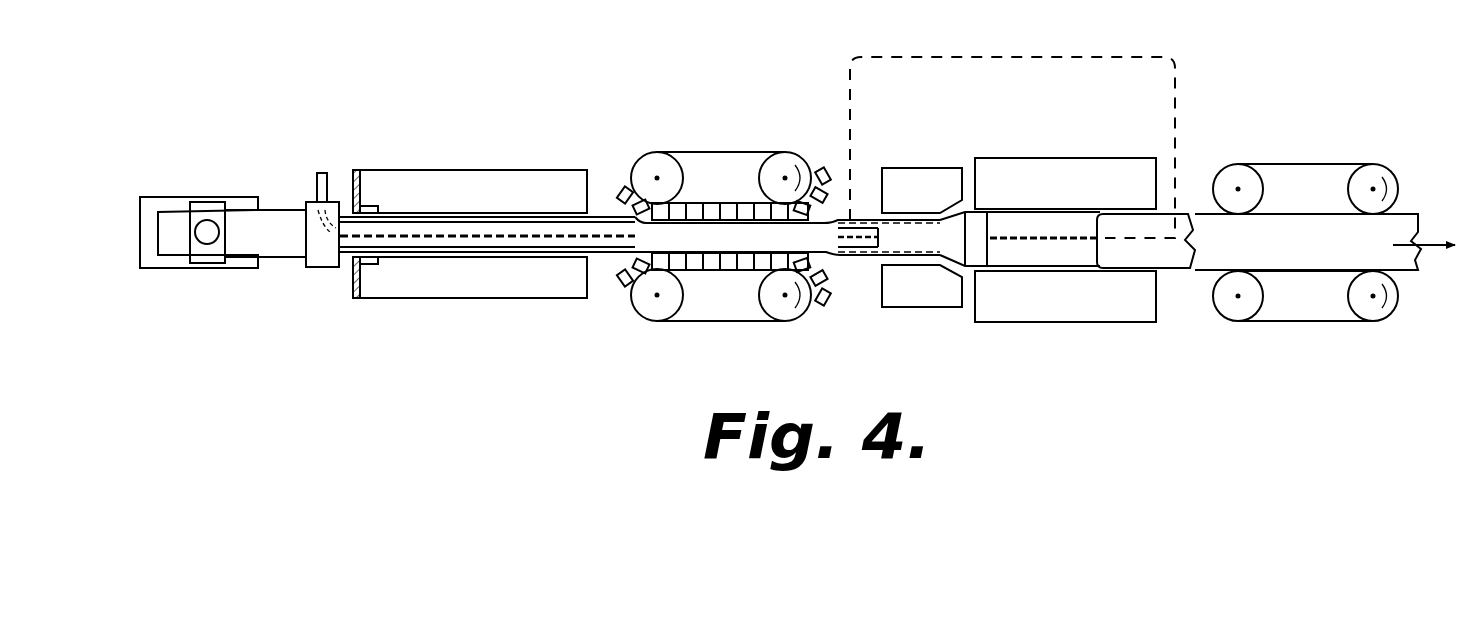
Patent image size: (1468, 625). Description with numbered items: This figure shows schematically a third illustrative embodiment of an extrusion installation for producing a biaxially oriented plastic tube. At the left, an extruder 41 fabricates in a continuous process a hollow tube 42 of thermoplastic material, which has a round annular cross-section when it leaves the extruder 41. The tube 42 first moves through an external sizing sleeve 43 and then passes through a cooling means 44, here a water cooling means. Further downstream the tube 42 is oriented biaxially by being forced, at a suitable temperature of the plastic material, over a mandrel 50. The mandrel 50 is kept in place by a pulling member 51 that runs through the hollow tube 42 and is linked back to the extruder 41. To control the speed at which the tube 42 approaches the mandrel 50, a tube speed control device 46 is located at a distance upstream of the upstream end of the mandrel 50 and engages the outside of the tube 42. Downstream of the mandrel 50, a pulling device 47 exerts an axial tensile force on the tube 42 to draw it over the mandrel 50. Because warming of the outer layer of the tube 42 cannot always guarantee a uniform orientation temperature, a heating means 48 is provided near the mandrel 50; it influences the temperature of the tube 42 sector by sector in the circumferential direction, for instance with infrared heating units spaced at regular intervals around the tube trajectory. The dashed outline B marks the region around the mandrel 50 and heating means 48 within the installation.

The extruder 41 is at (212, 205).
The hollow tube 42 is at (808, 237).
The external sizing sleeve 43 is at (352, 280).
The cooling means 44 is at (430, 170).
The tube speed control device 46 is at (725, 153).
The pulling device 47 is at (1317, 156).
The heating means 48 is at (928, 307).
The mandrel 50 is at (957, 250).
The pulling member 51 is at (510, 238).
The zone B is at (1177, 122).